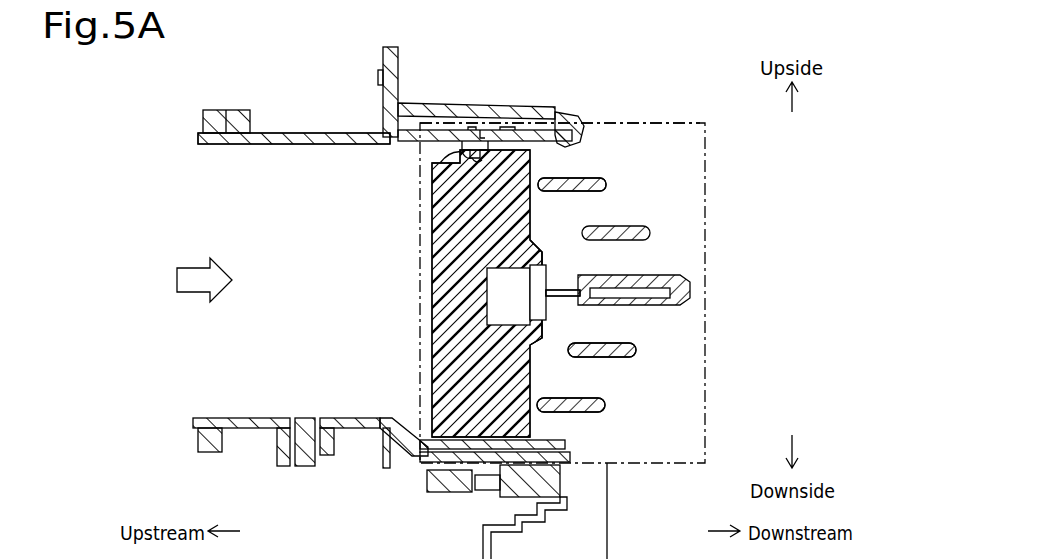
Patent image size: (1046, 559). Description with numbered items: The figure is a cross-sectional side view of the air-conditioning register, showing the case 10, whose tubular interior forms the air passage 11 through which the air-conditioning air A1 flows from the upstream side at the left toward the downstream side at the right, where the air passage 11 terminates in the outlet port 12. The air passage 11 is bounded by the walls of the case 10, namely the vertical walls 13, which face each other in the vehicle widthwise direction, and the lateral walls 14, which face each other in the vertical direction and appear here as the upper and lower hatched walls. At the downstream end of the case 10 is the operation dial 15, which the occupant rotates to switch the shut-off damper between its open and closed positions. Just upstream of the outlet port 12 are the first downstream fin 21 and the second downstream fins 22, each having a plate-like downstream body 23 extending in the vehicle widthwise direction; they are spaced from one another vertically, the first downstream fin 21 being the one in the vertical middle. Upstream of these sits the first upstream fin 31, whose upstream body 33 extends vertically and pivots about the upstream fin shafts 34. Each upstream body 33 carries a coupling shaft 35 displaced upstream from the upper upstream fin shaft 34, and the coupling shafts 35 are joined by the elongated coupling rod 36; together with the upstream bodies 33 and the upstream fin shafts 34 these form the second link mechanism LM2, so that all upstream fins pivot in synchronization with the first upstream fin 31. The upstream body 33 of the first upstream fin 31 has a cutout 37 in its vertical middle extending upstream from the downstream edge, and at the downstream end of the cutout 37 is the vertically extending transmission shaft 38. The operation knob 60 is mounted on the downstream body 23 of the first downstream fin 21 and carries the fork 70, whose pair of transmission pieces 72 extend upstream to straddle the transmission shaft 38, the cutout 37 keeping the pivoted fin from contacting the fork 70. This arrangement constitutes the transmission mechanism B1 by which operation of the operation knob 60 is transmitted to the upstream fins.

The case 10 is at (342, 88).
The air passage 11 is at (268, 232).
The outlet port 12 is at (578, 150).
The vertical walls 13 is at (287, 163).
The lateral walls 14 is at (333, 140).
The operation dial 15 is at (566, 478).
The first downstream fin 21 is at (602, 350).
The second downstream fins 22 is at (571, 295).
The downstream body 23 is at (640, 226).
The first upstream fin 31 is at (487, 293).
The upstream body 33 is at (432, 230).
The upstream fin shafts 34 is at (490, 140).
The coupling shaft 35 is at (470, 152).
The coupling rod 36 is at (462, 152).
The cutout 37 is at (487, 283).
The transmission shaft 38 is at (548, 278).
The operation knob 60 is at (690, 282).
The fork 70 is at (556, 285).
The transmission pieces 72 is at (492, 322).
The air-conditioning air A1 is at (195, 298).
The transmission mechanism B1 is at (561, 341).
The second link mechanism LM2 is at (463, 150).